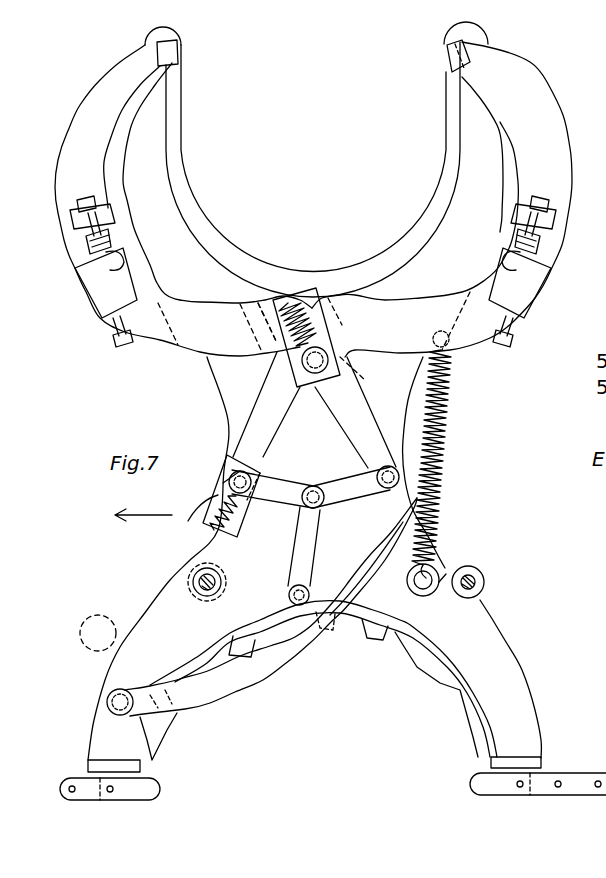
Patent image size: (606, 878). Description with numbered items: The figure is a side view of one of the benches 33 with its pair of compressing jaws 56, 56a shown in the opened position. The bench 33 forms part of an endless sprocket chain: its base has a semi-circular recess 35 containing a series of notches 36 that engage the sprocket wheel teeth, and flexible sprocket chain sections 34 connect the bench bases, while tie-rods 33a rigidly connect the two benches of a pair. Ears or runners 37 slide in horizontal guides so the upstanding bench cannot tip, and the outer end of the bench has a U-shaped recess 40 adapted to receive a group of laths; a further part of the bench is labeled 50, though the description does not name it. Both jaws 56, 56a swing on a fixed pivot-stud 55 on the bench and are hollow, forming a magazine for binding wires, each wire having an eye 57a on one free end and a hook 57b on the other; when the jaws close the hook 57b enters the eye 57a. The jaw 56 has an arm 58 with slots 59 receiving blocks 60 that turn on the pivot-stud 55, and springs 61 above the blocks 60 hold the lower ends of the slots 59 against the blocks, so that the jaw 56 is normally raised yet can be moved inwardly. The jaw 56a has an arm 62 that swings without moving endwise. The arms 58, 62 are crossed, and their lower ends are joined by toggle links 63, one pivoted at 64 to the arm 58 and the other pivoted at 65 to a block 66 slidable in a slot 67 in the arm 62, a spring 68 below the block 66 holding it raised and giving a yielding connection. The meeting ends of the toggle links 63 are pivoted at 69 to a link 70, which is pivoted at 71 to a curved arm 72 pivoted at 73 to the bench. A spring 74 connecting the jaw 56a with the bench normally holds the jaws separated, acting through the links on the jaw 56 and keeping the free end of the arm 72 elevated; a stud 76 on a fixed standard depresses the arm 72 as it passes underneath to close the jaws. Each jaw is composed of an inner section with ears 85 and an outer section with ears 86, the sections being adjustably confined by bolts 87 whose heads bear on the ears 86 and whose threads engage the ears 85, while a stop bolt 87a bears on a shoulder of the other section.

The bench 33 is at (390, 416).
The tie-rod 33a is at (505, 570).
The sprocket chain section 34 is at (92, 788).
The semi-circular recess 35 is at (323, 679).
The notch 36 is at (452, 686).
The ear or runner 37 is at (88, 765).
The U-shaped recess 40 is at (316, 159).
The left frame arm 50 is at (198, 598).
The pivot-stud 55 is at (315, 374).
The compressing jaw 56 is at (197, 300).
The compressing jaw 56a is at (452, 300).
The eye 57a is at (447, 69).
The hook 57b is at (183, 62).
The arm 58 is at (362, 402).
The slot 59 is at (318, 332).
The block 60 is at (330, 347).
The spring 61 is at (285, 330).
The arm 62 is at (268, 408).
The toggle link 63 is at (278, 480).
The pivot 64 is at (382, 489).
The pivot 65 is at (229, 481).
The block 66 is at (223, 483).
The slot 67 is at (190, 518).
The spring 68 is at (240, 506).
The pivot 69 is at (320, 506).
The link 70 is at (304, 548).
The pivot 71 is at (288, 595).
The curved arm 72 is at (280, 652).
The pivot 73 is at (106, 702).
The spring 74 is at (444, 463).
The stud 76 is at (84, 648).
The ear 85 is at (98, 273).
The ear 86 is at (78, 222).
The bolt 87 is at (95, 250).
The stop bolt 87a is at (530, 337).